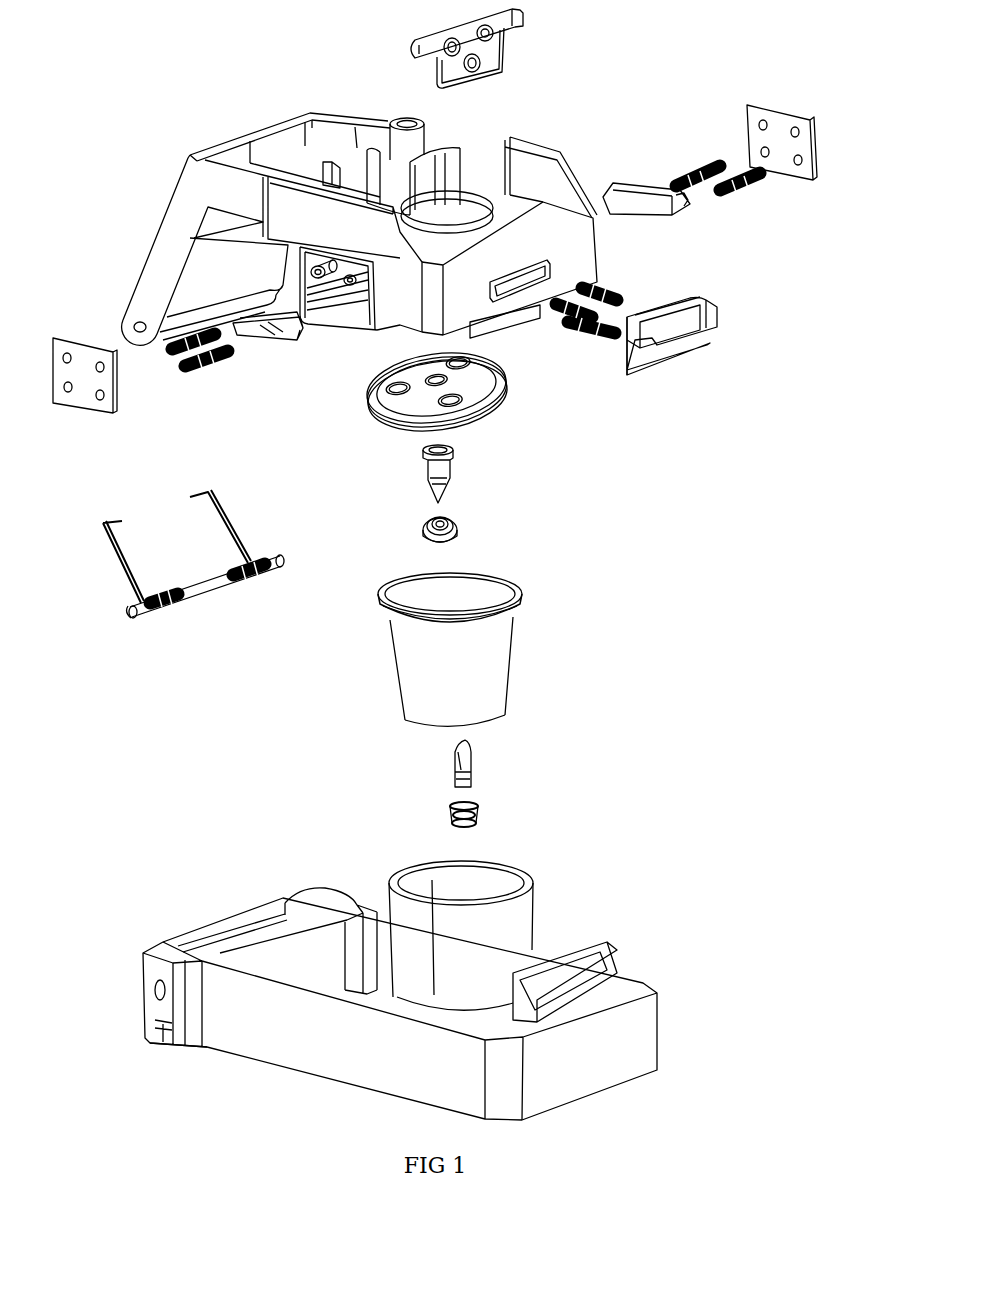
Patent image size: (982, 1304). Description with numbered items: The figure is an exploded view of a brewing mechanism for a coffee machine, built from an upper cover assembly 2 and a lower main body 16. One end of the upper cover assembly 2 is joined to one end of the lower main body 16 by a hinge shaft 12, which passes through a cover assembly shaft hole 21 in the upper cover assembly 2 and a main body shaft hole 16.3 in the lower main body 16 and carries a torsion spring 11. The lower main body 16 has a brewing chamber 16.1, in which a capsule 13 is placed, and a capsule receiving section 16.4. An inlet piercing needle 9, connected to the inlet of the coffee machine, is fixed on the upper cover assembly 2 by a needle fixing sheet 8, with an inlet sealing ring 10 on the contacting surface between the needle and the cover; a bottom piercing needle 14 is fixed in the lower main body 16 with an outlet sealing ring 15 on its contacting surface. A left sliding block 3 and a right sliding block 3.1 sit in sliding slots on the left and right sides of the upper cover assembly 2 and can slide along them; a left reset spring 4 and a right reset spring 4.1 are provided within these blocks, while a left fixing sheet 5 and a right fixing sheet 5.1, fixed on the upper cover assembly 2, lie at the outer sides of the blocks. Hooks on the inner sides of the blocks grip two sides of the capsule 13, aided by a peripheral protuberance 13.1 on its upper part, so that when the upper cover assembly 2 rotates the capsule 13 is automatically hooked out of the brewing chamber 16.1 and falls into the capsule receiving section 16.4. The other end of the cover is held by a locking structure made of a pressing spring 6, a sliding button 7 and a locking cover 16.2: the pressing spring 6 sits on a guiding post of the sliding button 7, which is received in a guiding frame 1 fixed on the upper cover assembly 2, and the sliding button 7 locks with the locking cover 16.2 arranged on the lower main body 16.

The guiding frame 1 is at (522, 25).
The upper cover assembly 2 is at (512, 132).
The cover assembly shaft hole 21 is at (135, 318).
The left sliding block 3 is at (307, 347).
The right sliding block 3.1 is at (606, 196).
The left reset spring 4 is at (207, 364).
The right reset spring 4.1 is at (680, 182).
The left fixing sheet 5 is at (115, 413).
The right fixing sheet 5.1 is at (747, 107).
The pressing spring 6 is at (630, 297).
The sliding button 7 is at (718, 304).
The needle fixing sheet 8 is at (493, 405).
The inlet piercing needle 9 is at (452, 482).
The inlet sealing ring 10 is at (463, 539).
The torsion spring 11 is at (250, 560).
The hinge shaft 12 is at (283, 560).
The capsule 13 is at (488, 649).
The peripheral protuberance 13.1 is at (521, 592).
The bottom piercing needle 14 is at (472, 772).
The outlet sealing ring 15 is at (480, 820).
The lower main body 16 is at (441, 977).
The brewing chamber 16.1 is at (533, 893).
The locking cover 16.2 is at (613, 973).
The main body shaft hole 16.3 is at (158, 983).
The capsule receiving section 16.4 is at (370, 910).